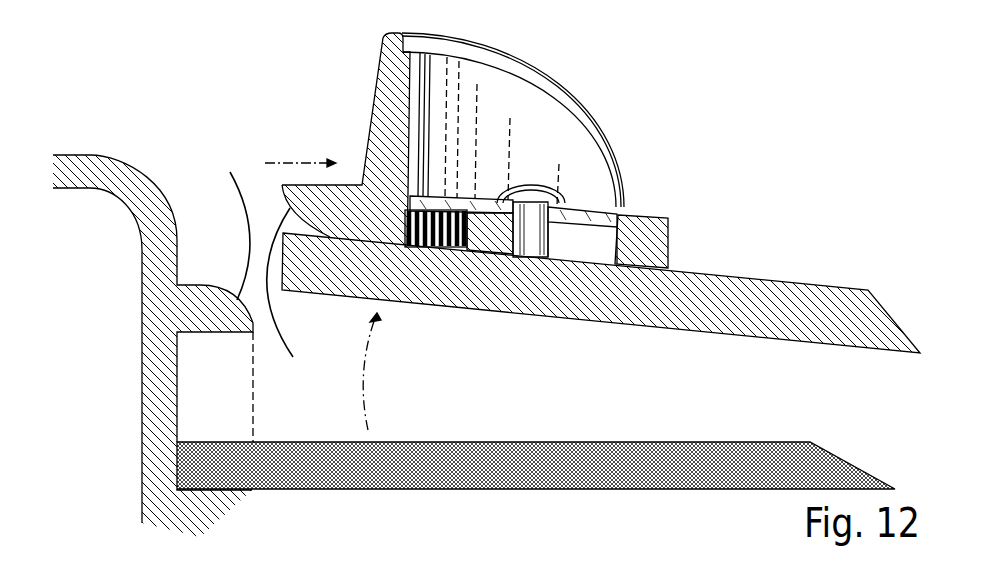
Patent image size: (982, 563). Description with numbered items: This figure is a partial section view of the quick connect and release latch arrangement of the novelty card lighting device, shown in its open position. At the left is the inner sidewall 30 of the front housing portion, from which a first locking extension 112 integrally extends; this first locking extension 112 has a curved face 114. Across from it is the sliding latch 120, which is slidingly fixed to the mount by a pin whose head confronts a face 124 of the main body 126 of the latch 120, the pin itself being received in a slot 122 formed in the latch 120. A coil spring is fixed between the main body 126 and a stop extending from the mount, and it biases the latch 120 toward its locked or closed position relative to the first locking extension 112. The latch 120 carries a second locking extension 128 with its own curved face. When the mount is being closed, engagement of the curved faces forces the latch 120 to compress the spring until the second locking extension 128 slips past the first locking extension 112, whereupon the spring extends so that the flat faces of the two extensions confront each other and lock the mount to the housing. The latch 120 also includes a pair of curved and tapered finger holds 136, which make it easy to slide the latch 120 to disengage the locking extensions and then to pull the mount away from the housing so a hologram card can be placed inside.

The inner sidewall 30 is at (493, 243).
The first locking extension 112 is at (193, 278).
The curved face 114 is at (218, 230).
The sliding latch 120 is at (525, 75).
The slot 122 is at (570, 240).
The face 124 is at (477, 202).
The main body 126 is at (380, 180).
The second locking extension 128 is at (302, 183).
The curved and tapered finger holds 136 is at (442, 48).